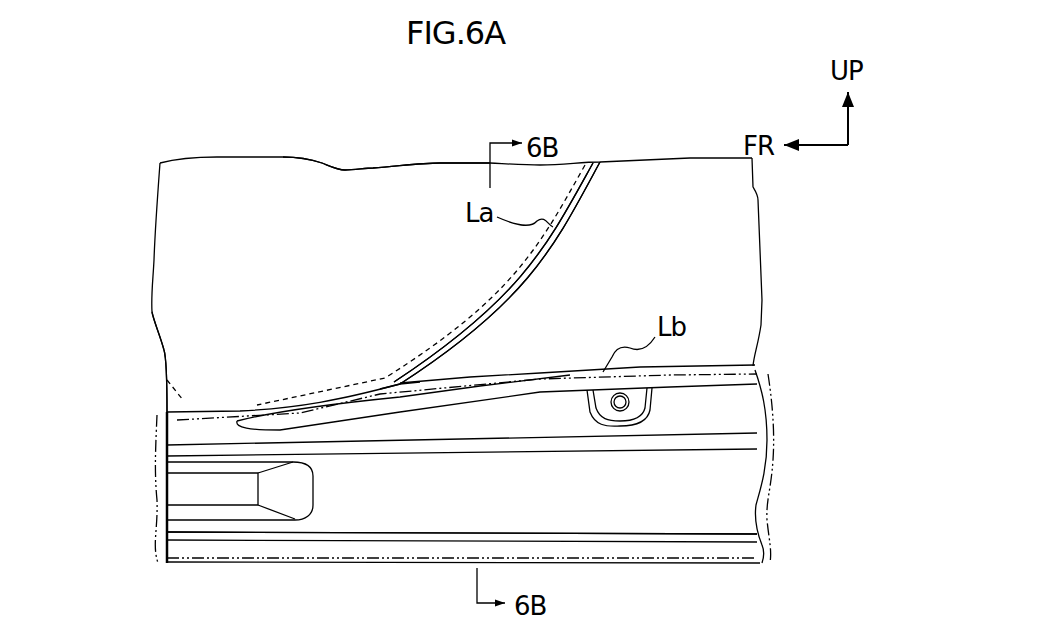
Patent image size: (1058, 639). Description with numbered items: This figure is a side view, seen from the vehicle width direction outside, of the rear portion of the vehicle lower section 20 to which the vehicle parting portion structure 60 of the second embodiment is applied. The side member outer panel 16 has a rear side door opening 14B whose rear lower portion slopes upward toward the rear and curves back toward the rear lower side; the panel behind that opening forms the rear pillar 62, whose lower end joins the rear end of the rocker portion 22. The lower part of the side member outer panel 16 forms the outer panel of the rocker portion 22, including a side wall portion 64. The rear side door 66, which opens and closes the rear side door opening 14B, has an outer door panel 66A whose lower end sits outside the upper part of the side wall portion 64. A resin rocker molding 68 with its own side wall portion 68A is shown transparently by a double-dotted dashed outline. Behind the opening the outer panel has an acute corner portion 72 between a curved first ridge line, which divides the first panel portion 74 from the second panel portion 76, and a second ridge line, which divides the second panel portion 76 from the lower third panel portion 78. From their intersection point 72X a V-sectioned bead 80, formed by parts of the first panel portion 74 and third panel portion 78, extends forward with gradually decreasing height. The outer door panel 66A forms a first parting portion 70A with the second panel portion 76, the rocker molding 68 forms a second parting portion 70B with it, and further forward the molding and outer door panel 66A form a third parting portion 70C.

The side member outer panel 16 is at (748, 277).
The vehicle lower section 20 is at (199, 571).
The rocker portion 22 is at (127, 438).
The vehicle parting portion structure 60 is at (413, 243).
The rear pillar 62 is at (640, 176).
The side wall portion 64 is at (393, 500).
The rear side door 66 is at (177, 205).
The outer door panel 66A is at (180, 268).
The rocker molding 68 is at (152, 485).
The side wall portion of rocker molding 68A is at (458, 513).
The first parting portion 70A is at (505, 286).
The second parting portion 70B is at (595, 363).
The third parting portion 70C is at (237, 399).
The corner portion 72 is at (437, 349).
The intersection point 72X is at (414, 382).
The first panel portion 74 is at (507, 299).
The second panel portion 76 is at (558, 332).
The third panel portion 78 is at (512, 391).
The bead 80 is at (415, 389).
The rear side door opening 14B is at (167, 380).